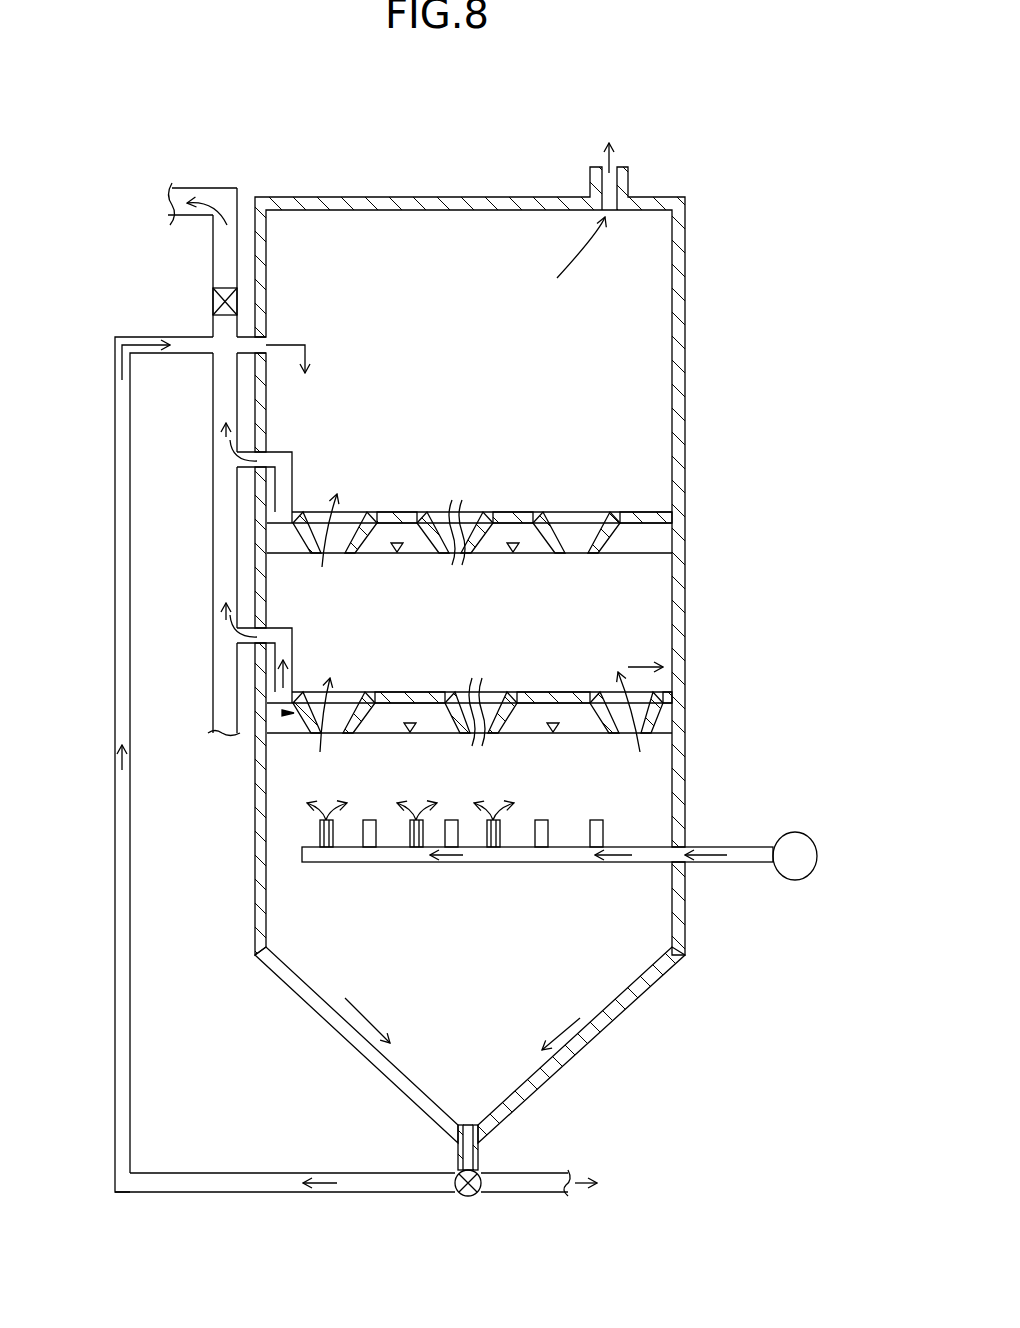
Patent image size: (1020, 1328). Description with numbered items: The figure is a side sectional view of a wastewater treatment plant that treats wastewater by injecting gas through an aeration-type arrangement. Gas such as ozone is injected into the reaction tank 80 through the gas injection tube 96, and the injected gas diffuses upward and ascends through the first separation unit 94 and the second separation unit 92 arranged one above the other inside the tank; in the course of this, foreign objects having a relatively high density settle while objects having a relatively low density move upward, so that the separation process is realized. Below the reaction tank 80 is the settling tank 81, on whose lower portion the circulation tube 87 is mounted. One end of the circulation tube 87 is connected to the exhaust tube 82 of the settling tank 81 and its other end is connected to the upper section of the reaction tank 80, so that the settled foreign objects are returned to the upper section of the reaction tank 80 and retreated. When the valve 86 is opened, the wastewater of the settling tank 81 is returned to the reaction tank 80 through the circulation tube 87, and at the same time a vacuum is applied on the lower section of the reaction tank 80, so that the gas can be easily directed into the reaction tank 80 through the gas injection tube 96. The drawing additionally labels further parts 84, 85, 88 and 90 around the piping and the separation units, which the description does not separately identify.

The reaction tank 80 is at (693, 293).
The settling tank 81 is at (664, 986).
The exhaust tube 82 is at (481, 1150).
The discharge pipe 84 is at (447, 1184).
The gas supply pipe 85 is at (250, 347).
The valve 86 is at (467, 1197).
The circulation tube 87 is at (110, 820).
The outlet pipe 88 is at (555, 1184).
The tray unit 90 is at (545, 623).
The second separation unit 92 is at (660, 530).
The first separation unit 94 is at (672, 693).
The gas injection tube 96 is at (727, 836).